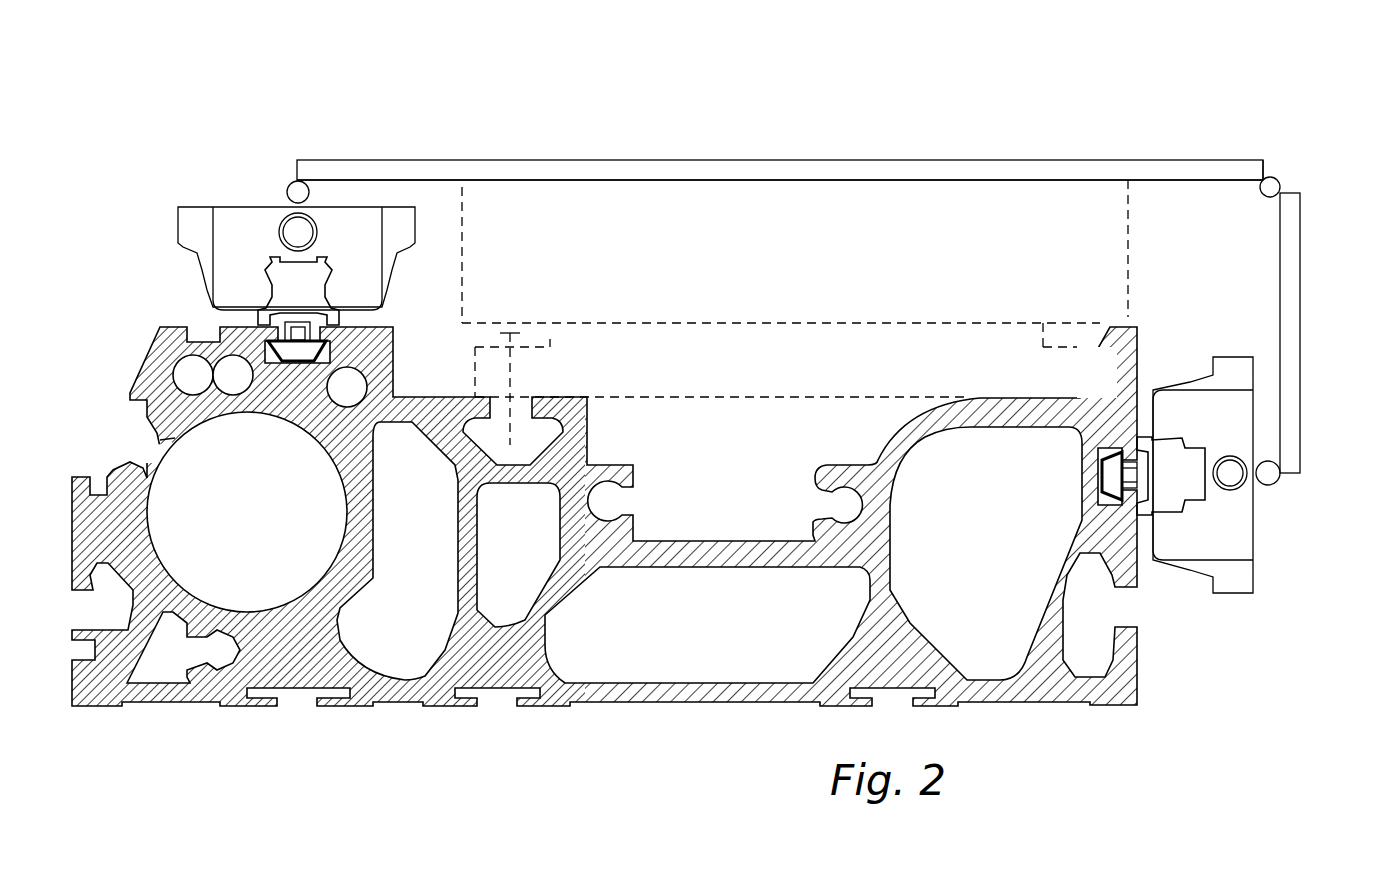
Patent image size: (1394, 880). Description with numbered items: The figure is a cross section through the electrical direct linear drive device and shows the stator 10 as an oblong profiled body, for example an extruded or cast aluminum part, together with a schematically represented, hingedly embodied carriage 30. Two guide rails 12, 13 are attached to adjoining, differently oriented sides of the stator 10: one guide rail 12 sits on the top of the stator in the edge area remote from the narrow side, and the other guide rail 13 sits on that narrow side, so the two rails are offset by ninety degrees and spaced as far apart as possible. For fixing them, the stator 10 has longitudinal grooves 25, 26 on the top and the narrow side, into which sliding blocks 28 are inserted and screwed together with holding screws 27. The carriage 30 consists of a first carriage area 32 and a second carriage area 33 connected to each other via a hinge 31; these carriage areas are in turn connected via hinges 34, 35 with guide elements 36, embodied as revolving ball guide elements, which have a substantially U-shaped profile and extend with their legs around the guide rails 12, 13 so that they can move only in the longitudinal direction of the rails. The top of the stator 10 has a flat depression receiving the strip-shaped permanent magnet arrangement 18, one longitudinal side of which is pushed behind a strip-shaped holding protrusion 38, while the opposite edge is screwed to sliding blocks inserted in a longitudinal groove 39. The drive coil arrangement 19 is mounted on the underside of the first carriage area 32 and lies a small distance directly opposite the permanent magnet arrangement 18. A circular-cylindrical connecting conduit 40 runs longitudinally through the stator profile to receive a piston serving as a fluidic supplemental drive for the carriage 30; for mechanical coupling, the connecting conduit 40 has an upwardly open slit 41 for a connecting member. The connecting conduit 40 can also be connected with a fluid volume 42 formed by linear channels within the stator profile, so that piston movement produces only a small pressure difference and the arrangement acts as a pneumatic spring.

The stator 10 is at (103, 687).
The guide rail 12 is at (290, 273).
The guide rail 13 is at (1168, 487).
The permanent magnet arrangement 18 is at (712, 365).
The drive coil arrangement 19 is at (803, 222).
The longitudinal groove 25 is at (273, 353).
The longitudinal groove 26 is at (1117, 507).
The holding screw 27 is at (297, 327).
The sliding block 28 is at (307, 350).
The carriage 30 is at (1225, 153).
The hinge 31 is at (1277, 185).
The first carriage area 32 is at (1075, 172).
The second carriage area 33 is at (1292, 278).
The hinge 34 is at (297, 184).
The hinge 35 is at (1267, 478).
The guide element 36 is at (255, 217).
The holding protrusion 38 is at (1117, 348).
The longitudinal groove 39 is at (537, 441).
The connecting conduit 40 is at (236, 519).
The slit 41 is at (143, 447).
The fluid volume 42 is at (400, 599).